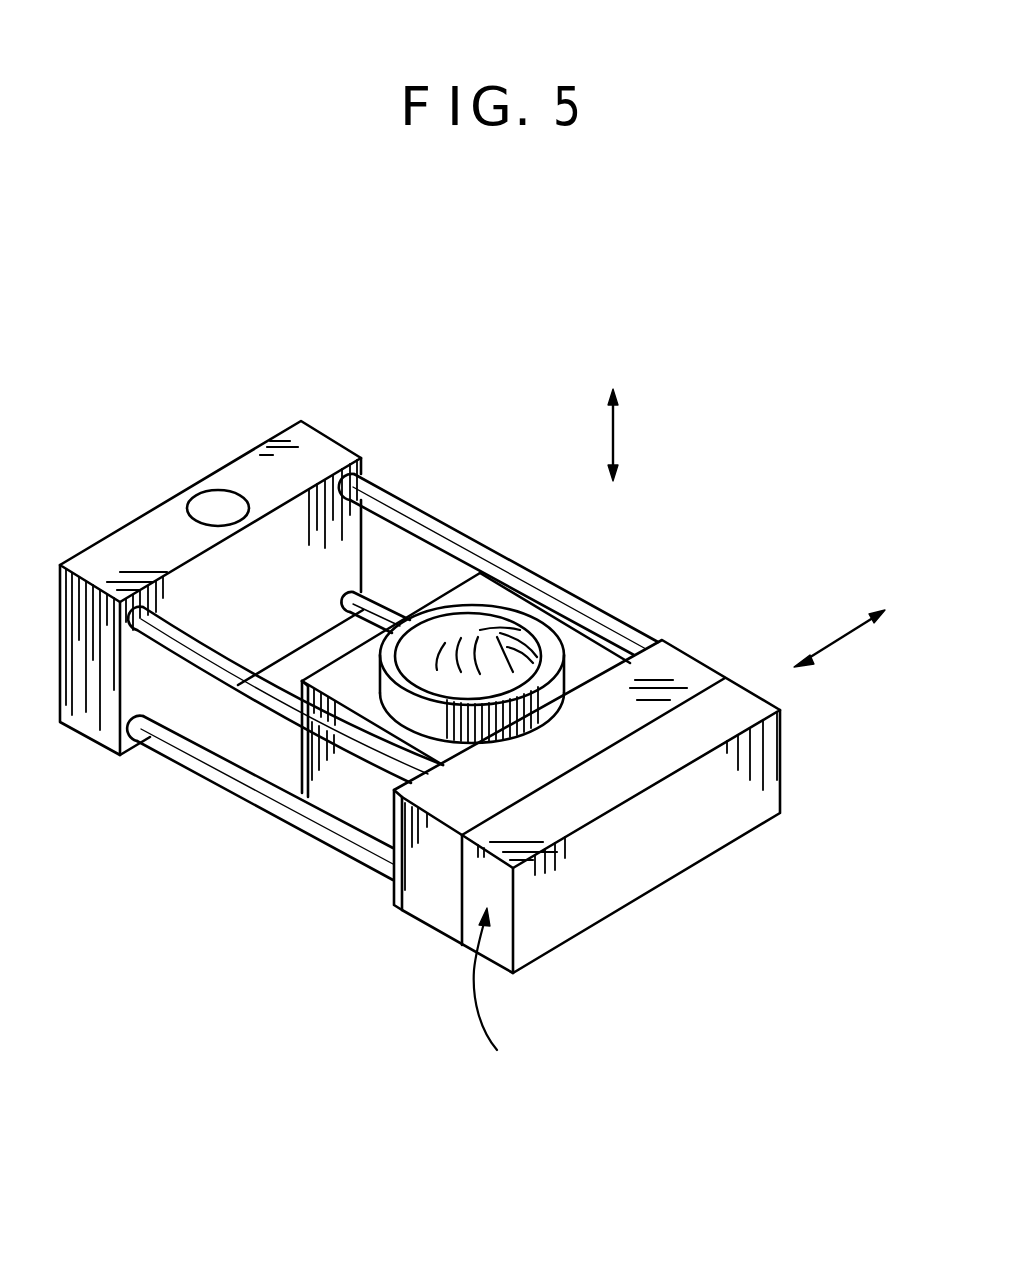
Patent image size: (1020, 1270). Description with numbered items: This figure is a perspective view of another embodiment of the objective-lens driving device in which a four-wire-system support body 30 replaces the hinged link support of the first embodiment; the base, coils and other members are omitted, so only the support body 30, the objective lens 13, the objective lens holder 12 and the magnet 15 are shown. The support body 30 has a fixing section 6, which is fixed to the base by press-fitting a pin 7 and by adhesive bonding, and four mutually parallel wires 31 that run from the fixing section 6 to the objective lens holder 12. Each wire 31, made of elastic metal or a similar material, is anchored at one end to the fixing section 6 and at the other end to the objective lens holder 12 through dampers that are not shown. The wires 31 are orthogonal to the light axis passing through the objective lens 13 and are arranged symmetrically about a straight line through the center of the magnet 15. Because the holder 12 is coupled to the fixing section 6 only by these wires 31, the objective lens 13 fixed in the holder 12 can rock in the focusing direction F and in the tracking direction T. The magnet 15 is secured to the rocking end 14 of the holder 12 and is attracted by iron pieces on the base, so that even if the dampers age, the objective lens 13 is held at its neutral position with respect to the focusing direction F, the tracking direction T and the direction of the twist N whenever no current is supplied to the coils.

The support body 30 is at (372, 408).
The fixing section 6 is at (263, 447).
The pin 7 is at (205, 498).
The wires 31 is at (387, 483).
The objective lens holder 12 is at (347, 783).
The objective lens 13 is at (513, 622).
The rocking end 14 is at (425, 900).
The magnet 15 is at (633, 882).
The focusing direction F is at (634, 435).
The tracking direction T is at (839, 625).
The direction of the twist N is at (468, 979).